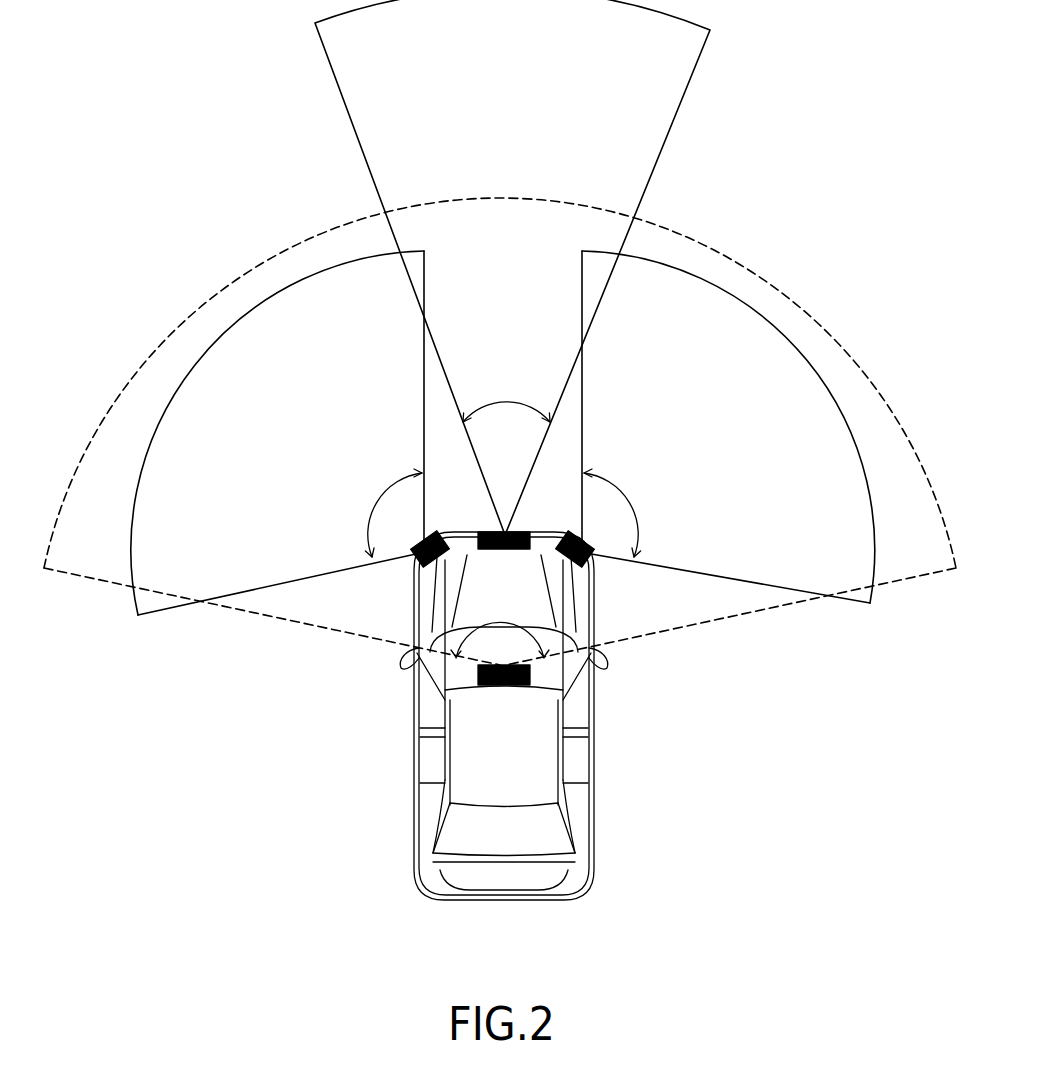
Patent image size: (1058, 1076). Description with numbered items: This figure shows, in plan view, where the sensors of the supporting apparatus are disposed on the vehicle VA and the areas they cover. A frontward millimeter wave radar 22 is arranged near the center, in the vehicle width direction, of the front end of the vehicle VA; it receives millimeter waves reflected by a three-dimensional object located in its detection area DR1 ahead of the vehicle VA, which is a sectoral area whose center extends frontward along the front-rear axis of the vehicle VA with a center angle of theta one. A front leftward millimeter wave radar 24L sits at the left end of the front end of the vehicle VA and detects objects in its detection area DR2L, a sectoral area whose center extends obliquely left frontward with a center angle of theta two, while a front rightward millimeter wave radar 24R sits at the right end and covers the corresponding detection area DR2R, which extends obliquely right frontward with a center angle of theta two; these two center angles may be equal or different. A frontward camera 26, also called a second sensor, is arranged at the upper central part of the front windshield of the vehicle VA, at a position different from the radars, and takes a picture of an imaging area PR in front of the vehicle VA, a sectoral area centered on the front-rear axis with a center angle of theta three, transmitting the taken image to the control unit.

The frontward millimeter wave radar 22 is at (527, 532).
The front leftward millimeter wave radar 24L is at (420, 562).
The front rightward millimeter wave radar 24R is at (588, 562).
The frontward camera 26 is at (478, 675).
The vehicle VA is at (593, 763).
The detection area DR1 is at (665, 143).
The detection area DR2L is at (167, 607).
The detection area DR2R is at (850, 600).
The imaging area PR is at (215, 298).